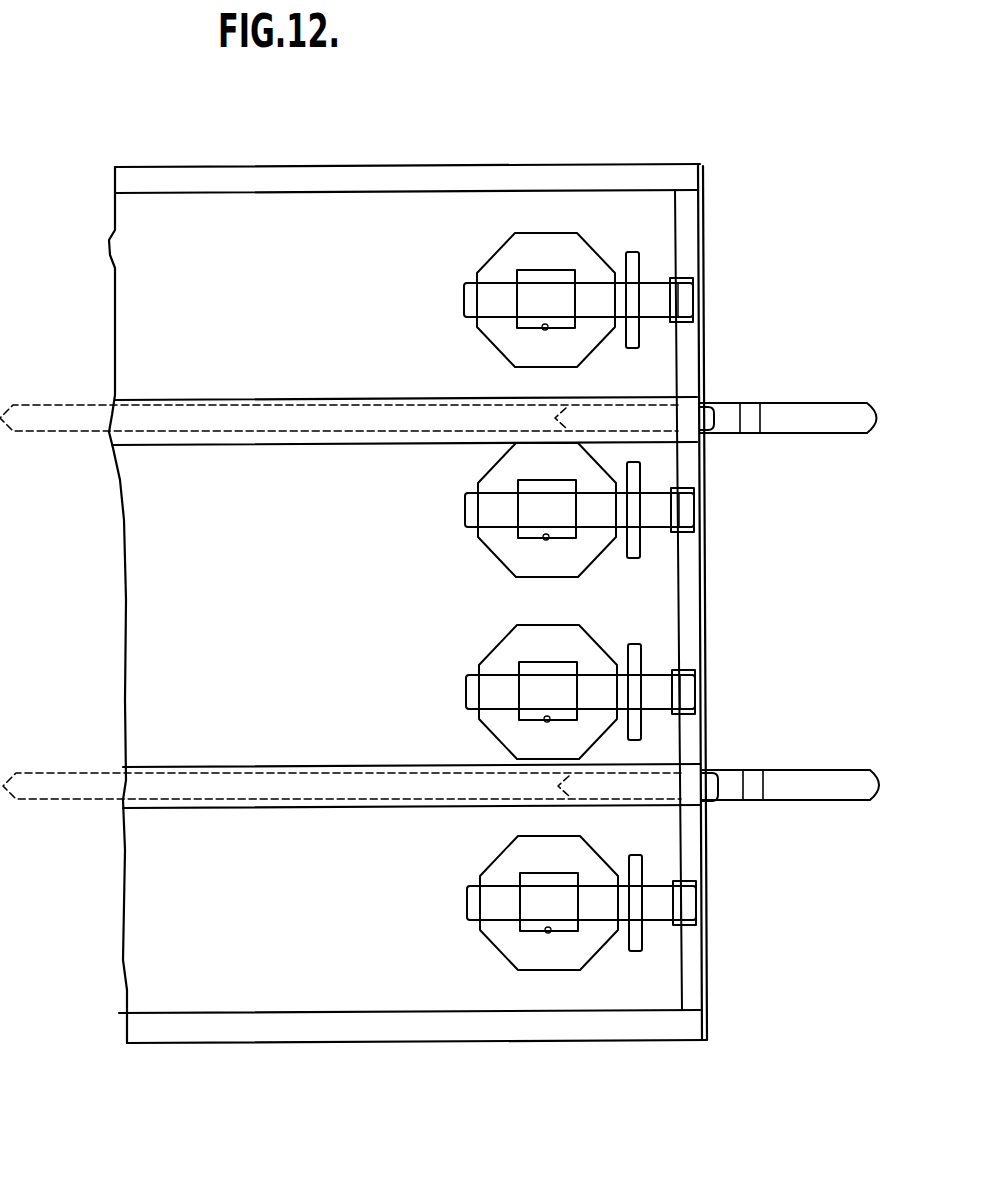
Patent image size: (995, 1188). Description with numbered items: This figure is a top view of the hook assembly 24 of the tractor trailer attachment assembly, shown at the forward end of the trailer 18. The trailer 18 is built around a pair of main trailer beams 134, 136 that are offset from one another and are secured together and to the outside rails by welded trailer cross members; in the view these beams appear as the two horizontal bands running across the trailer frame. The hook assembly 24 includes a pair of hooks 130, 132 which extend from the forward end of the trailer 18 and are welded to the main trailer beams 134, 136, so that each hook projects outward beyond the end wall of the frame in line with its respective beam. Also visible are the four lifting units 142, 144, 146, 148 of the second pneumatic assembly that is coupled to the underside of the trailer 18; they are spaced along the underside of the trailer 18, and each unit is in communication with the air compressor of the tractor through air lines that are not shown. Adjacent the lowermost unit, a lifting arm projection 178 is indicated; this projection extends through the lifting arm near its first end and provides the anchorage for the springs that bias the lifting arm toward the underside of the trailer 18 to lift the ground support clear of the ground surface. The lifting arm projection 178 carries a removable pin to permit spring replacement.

The trailer 18 is at (238, 551).
The hook assembly 24 is at (810, 352).
The hook 130 is at (852, 412).
The hook 132 is at (837, 777).
The main trailer beam 134 is at (122, 433).
The main trailer beam 136 is at (137, 792).
The lifting unit 142 is at (677, 903).
The lifting unit 144 is at (675, 695).
The lifting unit 146 is at (665, 507).
The lifting unit 148 is at (667, 302).
The lifting arm projection 178 is at (640, 938).